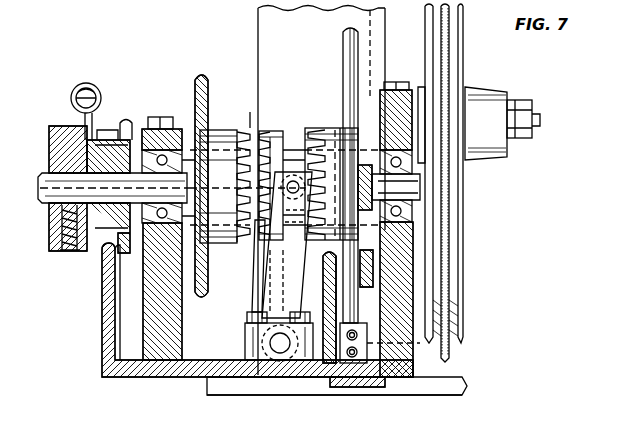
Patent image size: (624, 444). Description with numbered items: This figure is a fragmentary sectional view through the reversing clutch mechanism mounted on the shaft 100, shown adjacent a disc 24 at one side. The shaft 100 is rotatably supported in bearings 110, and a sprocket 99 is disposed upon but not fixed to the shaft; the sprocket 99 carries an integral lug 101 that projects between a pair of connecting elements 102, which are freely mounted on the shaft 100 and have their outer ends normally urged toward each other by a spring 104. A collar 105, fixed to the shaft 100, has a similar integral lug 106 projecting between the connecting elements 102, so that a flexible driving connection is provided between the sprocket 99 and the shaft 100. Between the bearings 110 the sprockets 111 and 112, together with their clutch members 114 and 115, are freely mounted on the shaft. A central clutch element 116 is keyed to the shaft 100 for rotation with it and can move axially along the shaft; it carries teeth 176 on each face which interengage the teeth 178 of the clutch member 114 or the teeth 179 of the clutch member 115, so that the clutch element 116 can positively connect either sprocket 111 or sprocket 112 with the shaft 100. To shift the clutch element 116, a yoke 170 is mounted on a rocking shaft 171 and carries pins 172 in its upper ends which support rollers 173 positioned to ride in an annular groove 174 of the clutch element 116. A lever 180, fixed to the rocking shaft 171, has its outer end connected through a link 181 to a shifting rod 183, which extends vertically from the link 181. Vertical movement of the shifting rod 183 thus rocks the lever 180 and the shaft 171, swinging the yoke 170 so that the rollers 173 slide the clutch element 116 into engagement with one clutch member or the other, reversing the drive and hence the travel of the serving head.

The pulley disc 24 is at (465, 292).
The sprocket 99 is at (128, 138).
The shaft 100 is at (40, 200).
The integral lug 101 is at (100, 150).
The connecting elements 102 is at (95, 86).
The spring 104 is at (78, 92).
The collar 105 is at (50, 140).
The integral lug 106 is at (78, 130).
The bearings 110 is at (170, 128).
The sprocket 111 is at (202, 80).
The sprocket 112 is at (388, 90).
The clutch member 114 is at (229, 130).
The clutch member 115 is at (345, 128).
The central clutch element 116 is at (275, 131).
The yoke 170 is at (263, 300).
The shaft 171 is at (279, 352).
The pins 172 is at (295, 200).
The rollers 173 is at (303, 300).
The annular groove 174 is at (322, 128).
The teeth 176 is at (266, 130).
The teeth 178 is at (251, 112).
The teeth 179 is at (330, 289).
The lever 180 is at (329, 300).
The link 181 is at (389, 364).
The shifting rod 183 is at (344, 44).